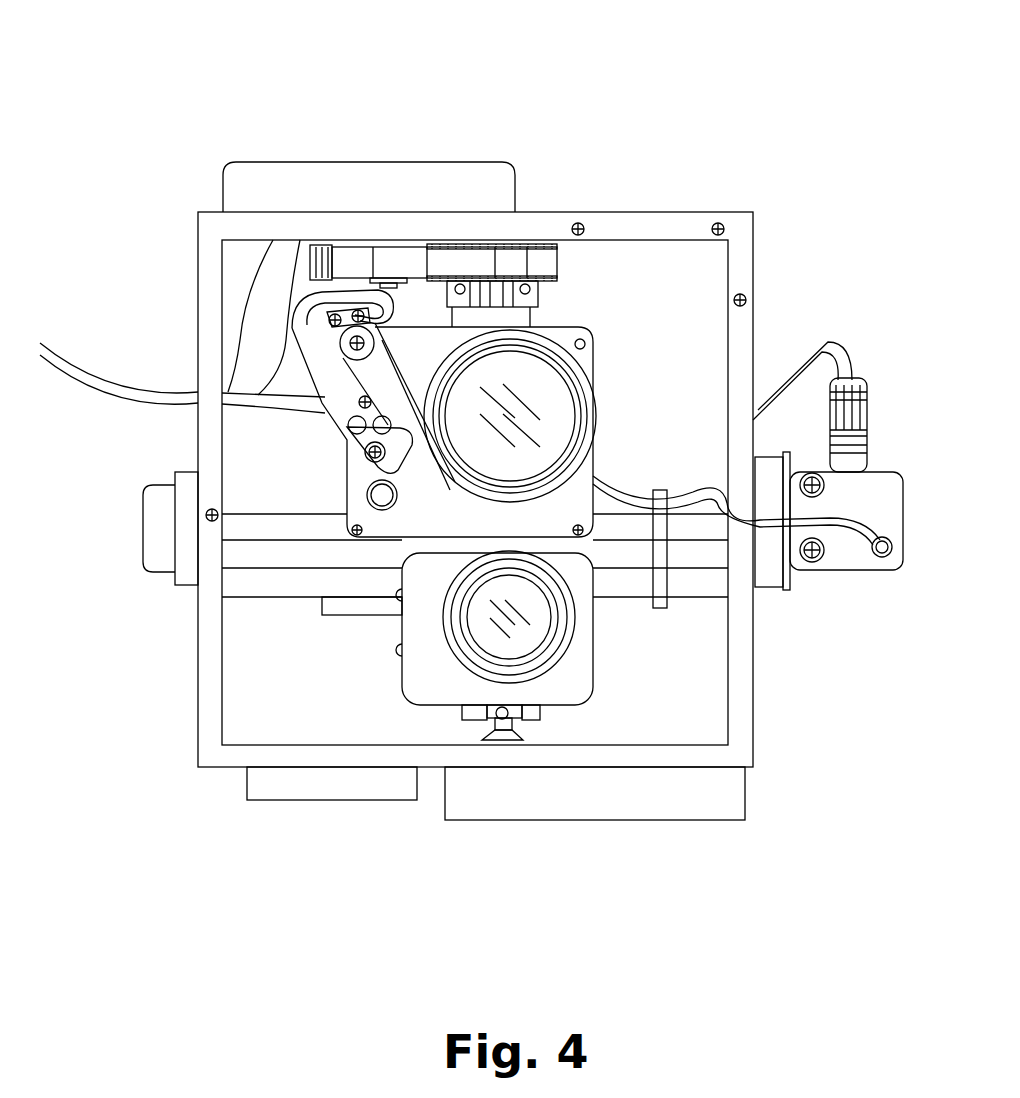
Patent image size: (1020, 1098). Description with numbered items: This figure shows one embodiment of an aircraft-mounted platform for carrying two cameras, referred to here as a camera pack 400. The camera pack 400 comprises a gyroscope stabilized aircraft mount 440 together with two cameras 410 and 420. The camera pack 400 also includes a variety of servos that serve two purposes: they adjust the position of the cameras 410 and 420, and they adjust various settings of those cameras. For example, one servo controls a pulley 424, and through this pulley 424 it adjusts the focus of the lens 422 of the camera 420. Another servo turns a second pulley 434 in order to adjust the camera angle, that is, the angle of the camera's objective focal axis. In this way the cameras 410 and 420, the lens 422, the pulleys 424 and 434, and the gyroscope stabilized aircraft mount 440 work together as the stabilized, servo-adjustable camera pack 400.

The camera pack 400 is at (625, 95).
The camera 410 is at (396, 652).
The camera 420 is at (590, 333).
The lens 422 is at (590, 395).
The pulley 424 is at (410, 330).
The pulley 434 is at (553, 268).
The gyroscope stabilized aircraft mount 440 is at (837, 572).